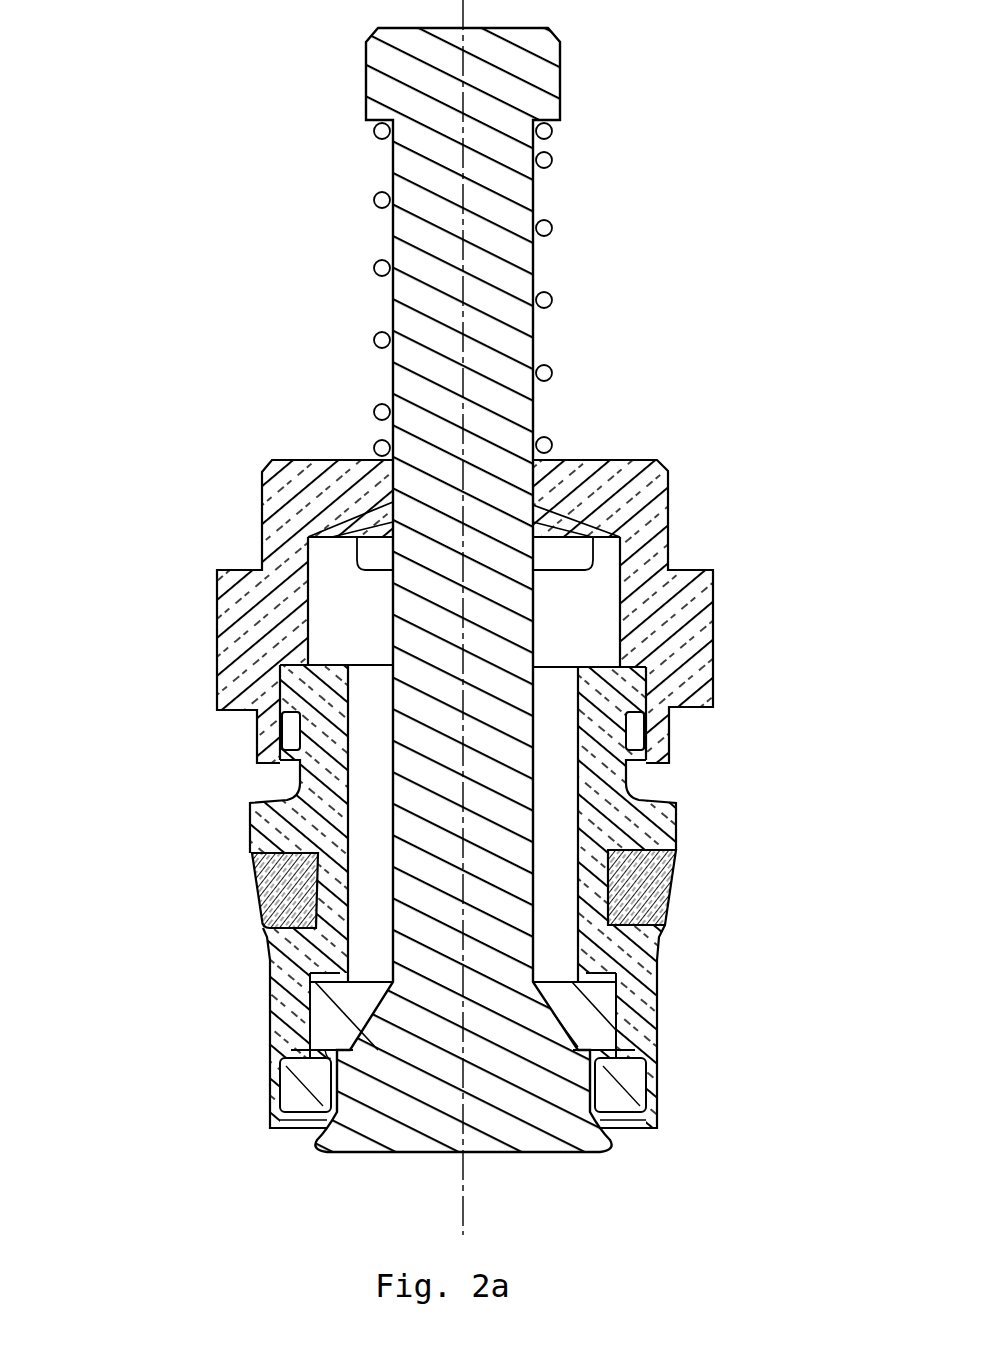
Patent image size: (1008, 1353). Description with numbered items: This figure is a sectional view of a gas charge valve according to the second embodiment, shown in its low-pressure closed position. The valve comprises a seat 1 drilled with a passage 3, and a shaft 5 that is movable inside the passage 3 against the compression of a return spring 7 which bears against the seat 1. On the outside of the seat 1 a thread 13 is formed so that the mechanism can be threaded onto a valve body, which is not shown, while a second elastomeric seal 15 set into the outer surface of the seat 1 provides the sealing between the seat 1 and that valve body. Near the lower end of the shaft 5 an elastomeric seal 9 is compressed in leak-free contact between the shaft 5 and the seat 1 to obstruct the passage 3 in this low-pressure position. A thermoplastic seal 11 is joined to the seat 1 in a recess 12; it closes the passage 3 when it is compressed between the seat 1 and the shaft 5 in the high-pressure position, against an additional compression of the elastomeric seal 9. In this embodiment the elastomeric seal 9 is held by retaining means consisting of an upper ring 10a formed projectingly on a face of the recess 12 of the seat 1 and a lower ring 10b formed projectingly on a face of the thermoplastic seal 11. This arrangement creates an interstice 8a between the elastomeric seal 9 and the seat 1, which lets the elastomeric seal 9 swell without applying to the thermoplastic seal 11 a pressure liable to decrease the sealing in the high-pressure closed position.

The seat 1 is at (657, 793).
The passage 3 is at (560, 677).
The shaft 5 is at (502, 218).
The return spring 7 is at (370, 402).
The interstice 8a is at (310, 968).
The elastomeric seal 9 is at (333, 1010).
The upper ring 10a is at (585, 973).
The lower ring 10b is at (628, 1062).
The thermoplastic seal 11 is at (282, 1092).
The recess 12 is at (640, 1005).
The thread 13 is at (213, 633).
The second elastomeric seal 15 is at (260, 862).